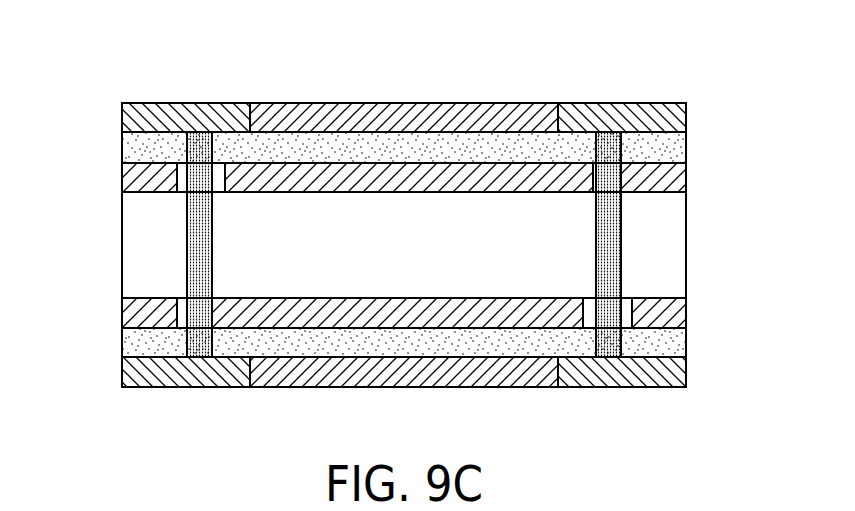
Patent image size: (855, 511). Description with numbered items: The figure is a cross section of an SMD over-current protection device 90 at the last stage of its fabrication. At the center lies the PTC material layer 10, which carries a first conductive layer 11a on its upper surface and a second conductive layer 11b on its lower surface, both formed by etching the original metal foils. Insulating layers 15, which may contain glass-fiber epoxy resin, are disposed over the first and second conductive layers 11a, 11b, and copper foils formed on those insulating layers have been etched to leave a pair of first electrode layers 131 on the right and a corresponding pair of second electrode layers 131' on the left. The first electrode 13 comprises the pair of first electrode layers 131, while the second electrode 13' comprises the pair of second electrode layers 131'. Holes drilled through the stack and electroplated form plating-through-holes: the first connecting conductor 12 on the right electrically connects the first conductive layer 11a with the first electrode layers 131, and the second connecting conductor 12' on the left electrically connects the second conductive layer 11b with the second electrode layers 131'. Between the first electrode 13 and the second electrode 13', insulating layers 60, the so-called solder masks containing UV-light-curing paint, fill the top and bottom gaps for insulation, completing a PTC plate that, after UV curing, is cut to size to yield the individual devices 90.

The SMD over-current protection device 90 is at (687, 78).
The PTC material layer 10 is at (683, 261).
The first conductive layer 11a is at (577, 174).
The second conductive layer 11b is at (571, 318).
The first connecting conductor 12 is at (674, 244).
The second connecting conductor 12' is at (137, 244).
The first electrode 13 is at (659, 367).
The second electrode 13' is at (153, 367).
The insulating layer 15 is at (682, 148).
The insulating layer (solder mask) 60 is at (423, 117).
The first electrode layer 131 is at (660, 245).
The second electrode layer 131' is at (151, 244).